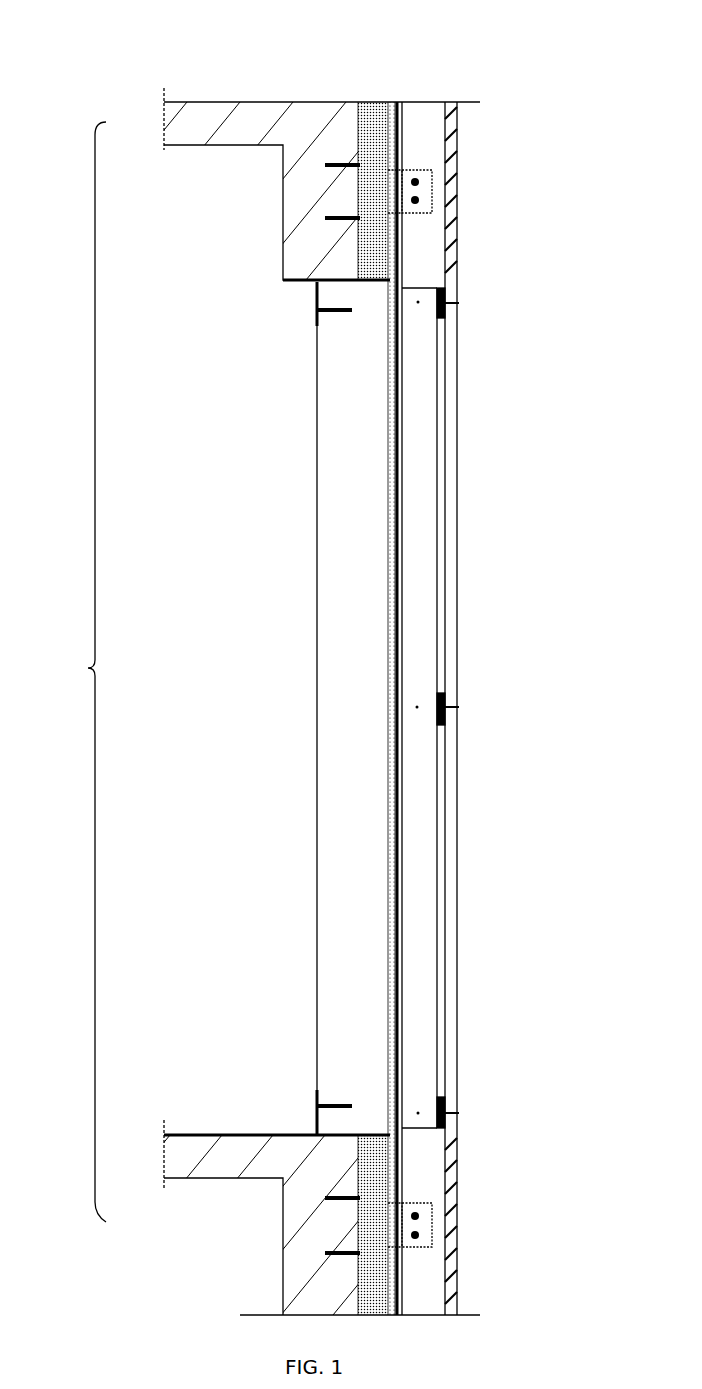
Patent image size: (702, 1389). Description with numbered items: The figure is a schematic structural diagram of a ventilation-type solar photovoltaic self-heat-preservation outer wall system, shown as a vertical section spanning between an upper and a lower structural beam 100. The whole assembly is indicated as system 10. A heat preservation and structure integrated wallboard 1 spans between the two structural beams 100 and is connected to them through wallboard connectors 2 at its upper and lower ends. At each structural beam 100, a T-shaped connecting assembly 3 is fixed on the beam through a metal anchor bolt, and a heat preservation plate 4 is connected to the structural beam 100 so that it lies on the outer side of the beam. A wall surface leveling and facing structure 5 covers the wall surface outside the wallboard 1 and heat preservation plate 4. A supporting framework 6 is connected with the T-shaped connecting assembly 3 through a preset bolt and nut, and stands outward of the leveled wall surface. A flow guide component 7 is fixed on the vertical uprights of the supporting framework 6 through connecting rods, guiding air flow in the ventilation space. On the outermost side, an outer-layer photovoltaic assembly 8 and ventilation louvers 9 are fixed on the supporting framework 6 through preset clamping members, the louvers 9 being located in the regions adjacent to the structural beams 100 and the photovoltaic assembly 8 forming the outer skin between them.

The heat preservation and structure integrated wallboard 1 is at (353, 710).
The wallboard connector 2 is at (281, 708).
The T-shaped connecting assembly 3 is at (415, 185).
The heat preservation plate 4 is at (383, 100).
The wall surface leveling and facing structure 5 is at (402, 363).
The supporting framework 6 is at (445, 707).
The flow guide component 7 is at (491, 746).
The outer-layer photovoltaic assembly 8 is at (455, 448).
The ventilation louver 9 is at (457, 137).
The curtain wall system 10 is at (75, 672).
The structural beam 100 is at (303, 188).